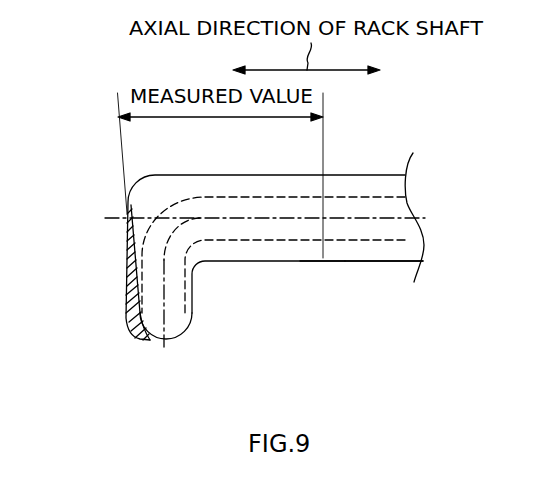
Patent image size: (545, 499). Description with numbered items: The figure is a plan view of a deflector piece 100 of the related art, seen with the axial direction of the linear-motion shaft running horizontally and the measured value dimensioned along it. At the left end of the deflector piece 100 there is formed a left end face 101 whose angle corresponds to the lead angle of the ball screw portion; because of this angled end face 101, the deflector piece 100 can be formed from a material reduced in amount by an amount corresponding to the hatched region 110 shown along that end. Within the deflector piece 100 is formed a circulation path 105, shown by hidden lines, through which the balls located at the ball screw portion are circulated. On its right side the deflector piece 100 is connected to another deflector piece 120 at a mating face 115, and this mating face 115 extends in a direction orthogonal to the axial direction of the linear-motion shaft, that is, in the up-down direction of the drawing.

The deflector piece 100 is at (268, 262).
The left end face 101 is at (127, 263).
The circulation path 105 is at (192, 285).
The hatched region 110 is at (127, 331).
The mating face 115 is at (323, 248).
The another deflector piece 120 is at (375, 262).